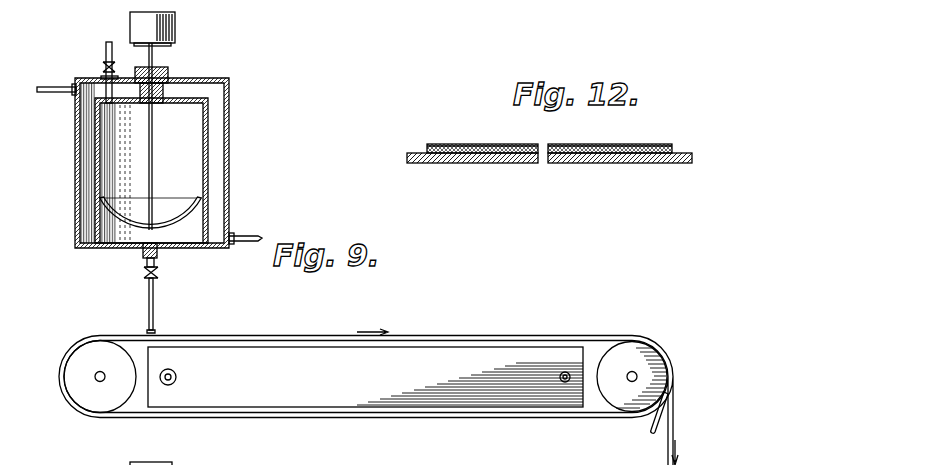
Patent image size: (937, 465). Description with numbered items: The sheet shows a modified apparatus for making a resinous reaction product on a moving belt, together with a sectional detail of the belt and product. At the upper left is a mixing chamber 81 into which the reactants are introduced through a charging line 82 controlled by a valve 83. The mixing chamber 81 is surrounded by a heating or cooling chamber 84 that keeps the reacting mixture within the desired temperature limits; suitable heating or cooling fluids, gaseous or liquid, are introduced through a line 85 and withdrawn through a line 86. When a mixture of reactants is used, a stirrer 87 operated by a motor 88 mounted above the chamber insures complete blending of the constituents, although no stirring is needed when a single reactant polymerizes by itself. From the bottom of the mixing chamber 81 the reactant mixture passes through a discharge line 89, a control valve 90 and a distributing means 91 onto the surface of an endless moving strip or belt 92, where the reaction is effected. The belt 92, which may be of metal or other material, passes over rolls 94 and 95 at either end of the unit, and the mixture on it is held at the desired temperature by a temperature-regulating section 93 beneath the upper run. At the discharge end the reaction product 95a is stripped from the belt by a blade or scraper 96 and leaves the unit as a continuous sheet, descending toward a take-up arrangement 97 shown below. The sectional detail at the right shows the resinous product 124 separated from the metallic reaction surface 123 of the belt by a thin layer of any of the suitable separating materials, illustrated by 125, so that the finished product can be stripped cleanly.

In FIG. 9, the mixing chamber 81 is at (193, 100).
In FIG. 9, the charging line 82 is at (105, 43).
In FIG. 9, the valve 83 is at (102, 66).
In FIG. 9, the heating or cooling chamber 84 is at (230, 134).
In FIG. 9, the line 85 is at (244, 237).
In FIG. 9, the line 86 is at (52, 85).
In FIG. 9, the stirrer 87 is at (157, 203).
In FIG. 9, the motor 88 is at (176, 30).
In FIG. 9, the discharge line 89 is at (143, 258).
In FIG. 9, the control valve 90 is at (158, 271).
In FIG. 9, the distributing means 91 is at (157, 312).
In FIG. 9, the endless moving strip or belt 92 is at (120, 336).
In FIG. 9, the temperature-regulating section 93 is at (408, 365).
In FIG. 9, the roll 94 is at (637, 355).
In FIG. 9, the roll 95 is at (77, 370).
In FIG. 9, the reaction product 95a is at (675, 418).
In FIG. 9, the blade or scraper 96 is at (653, 420).
In FIG. 9, the take-up device 97 is at (520, 464).
In FIG. 12, the metallic reaction surface 123 is at (630, 164).
In FIG. 12, the resinous product 124 is at (649, 145).
In FIG. 12, the separating material 125 is at (674, 152).